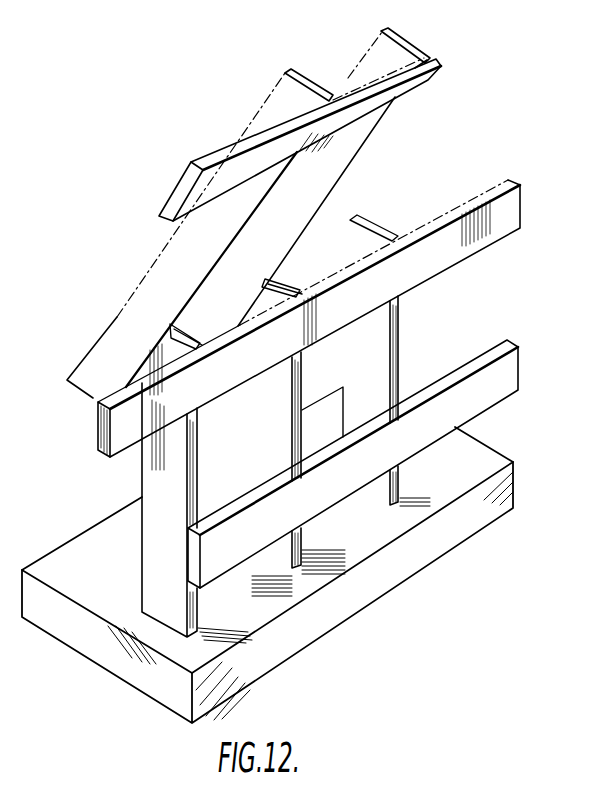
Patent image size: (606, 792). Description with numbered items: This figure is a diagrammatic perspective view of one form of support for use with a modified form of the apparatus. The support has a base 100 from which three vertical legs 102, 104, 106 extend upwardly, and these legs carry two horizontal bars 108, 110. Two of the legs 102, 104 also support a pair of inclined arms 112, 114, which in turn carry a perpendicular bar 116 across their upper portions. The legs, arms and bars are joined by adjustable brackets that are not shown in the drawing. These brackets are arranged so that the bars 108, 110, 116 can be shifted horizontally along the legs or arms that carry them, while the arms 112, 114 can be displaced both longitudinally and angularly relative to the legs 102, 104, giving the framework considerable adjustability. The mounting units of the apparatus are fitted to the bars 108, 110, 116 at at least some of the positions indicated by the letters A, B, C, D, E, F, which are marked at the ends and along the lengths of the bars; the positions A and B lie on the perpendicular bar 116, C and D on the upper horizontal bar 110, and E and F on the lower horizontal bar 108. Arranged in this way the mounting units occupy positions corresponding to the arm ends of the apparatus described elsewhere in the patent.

The base 100 is at (72, 633).
The vertical leg 102 is at (165, 468).
The vertical leg 104 is at (300, 375).
The vertical leg 106 is at (398, 330).
The horizontal bar 108 is at (513, 367).
The horizontal bar 110 is at (457, 257).
The inclined arm 112 is at (120, 325).
The inclined arm 114 is at (335, 163).
The perpendicular bar 116 is at (353, 94).
The mounting position A is at (215, 186).
The mounting position B is at (410, 93).
The mounting position C is at (132, 419).
The mounting position D is at (520, 193).
The mounting position E is at (220, 549).
The mounting position F is at (500, 378).